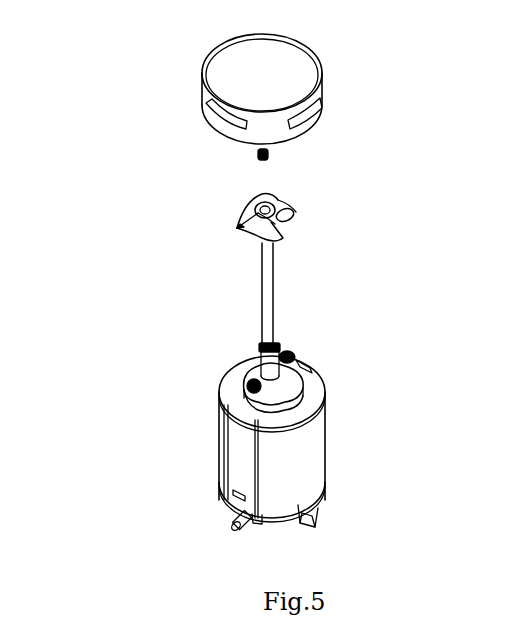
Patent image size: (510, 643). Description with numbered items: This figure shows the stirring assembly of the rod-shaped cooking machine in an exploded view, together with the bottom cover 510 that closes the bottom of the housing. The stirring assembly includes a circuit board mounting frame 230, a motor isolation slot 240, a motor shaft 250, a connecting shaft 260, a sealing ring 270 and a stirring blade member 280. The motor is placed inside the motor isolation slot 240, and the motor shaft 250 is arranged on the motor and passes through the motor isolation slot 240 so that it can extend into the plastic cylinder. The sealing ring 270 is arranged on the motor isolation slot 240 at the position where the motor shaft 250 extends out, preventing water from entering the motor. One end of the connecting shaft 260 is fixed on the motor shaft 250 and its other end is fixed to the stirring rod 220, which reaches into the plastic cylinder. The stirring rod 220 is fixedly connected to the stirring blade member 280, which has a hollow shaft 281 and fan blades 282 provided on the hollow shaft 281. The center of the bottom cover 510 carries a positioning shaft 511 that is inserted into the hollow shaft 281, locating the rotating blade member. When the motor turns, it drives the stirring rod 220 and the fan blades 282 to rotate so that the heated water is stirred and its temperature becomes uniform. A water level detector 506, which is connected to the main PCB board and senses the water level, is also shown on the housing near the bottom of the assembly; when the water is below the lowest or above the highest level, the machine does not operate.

The bottom cover 510 is at (287, 75).
The positioning shaft 511 is at (258, 157).
The stirring blade member 280 is at (349, 190).
The hollow shaft 281 is at (290, 210).
The fan blades 282 is at (267, 198).
The stirring rod 220 is at (268, 283).
The connecting shaft 260 is at (280, 347).
The motor shaft 250 is at (296, 372).
The sealing ring 270 is at (233, 383).
The motor isolation slot 240 is at (285, 462).
The circuit board mounting frame 230 is at (318, 508).
The water level detector 506 is at (237, 520).